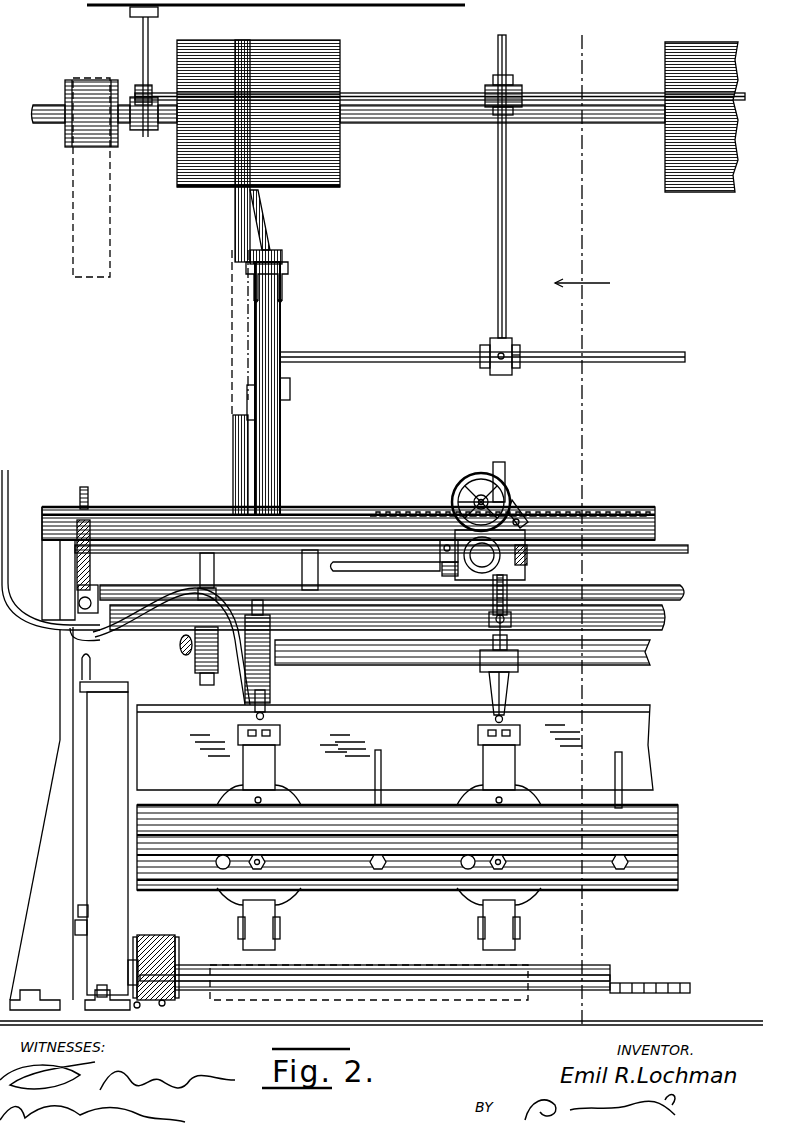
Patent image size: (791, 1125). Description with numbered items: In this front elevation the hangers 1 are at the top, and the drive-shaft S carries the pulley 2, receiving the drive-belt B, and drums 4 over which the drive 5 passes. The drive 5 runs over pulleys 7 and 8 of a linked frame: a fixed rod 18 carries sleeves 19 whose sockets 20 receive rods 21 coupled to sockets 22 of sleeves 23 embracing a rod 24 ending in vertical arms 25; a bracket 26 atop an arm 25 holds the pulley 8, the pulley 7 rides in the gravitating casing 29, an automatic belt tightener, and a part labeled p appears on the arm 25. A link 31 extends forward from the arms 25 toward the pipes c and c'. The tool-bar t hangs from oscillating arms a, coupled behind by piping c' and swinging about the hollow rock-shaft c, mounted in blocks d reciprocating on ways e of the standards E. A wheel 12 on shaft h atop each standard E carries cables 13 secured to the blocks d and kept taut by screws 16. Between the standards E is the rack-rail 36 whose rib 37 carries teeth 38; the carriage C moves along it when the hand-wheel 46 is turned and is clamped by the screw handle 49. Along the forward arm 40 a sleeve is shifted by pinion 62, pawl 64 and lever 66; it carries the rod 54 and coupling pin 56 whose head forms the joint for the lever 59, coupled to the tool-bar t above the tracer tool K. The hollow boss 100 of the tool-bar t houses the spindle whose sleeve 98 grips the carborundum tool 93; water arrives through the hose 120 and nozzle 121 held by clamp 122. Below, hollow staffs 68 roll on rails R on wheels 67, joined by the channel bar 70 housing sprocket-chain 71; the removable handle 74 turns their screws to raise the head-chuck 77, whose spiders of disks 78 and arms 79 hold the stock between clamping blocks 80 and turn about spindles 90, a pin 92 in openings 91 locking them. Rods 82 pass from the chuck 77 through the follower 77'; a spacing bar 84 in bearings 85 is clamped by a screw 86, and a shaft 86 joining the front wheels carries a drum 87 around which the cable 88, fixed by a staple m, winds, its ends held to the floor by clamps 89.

The hanger 1 is at (143, 42).
The pulley 2 is at (67, 138).
The drum 4 is at (340, 165).
The tool-driving belt 5 is at (263, 216).
The pulley 7 is at (138, 92).
The pulley 8 is at (280, 256).
The wheel 12 is at (60, 560).
The cable 13 is at (82, 512).
The tightening screw 16 is at (86, 490).
The rod 18 is at (598, 93).
The sleeve 19 is at (522, 92).
The socket 20 is at (512, 78).
The rod 21 is at (506, 45).
The socket 22 is at (498, 340).
The sleeve 23 is at (520, 365).
The rod 24 is at (650, 352).
The arm 25 is at (281, 328).
The bracket 26 is at (290, 287).
The pulley-block casing 29 is at (247, 402).
The link 31 is at (315, 553).
The rack-rail 36 is at (162, 528).
The rib 37 is at (305, 510).
The teeth 38 is at (552, 512).
The arm 40 is at (476, 565).
The hand-wheel 46 is at (481, 473).
The handle 49 is at (515, 500).
The adjustable rod 54 is at (500, 465).
The coupling pin 56 is at (512, 672).
The lever 59 is at (492, 600).
The pinion 62 is at (445, 540).
The pawl 64 is at (446, 560).
The lever 66 is at (405, 562).
The wheel 67 is at (97, 990).
The hollow staff 68 is at (100, 792).
The channel bar 70 is at (292, 966).
The sprocket-chain 71 is at (632, 984).
The removable handle 74 is at (80, 682).
The head-chuck 77 is at (407, 870).
The tail-chuck 77' is at (395, 731).
The disk 78 is at (518, 790).
The radiating arm 79 is at (268, 770).
The clamping block 80 is at (240, 742).
The spacing rod 82 is at (382, 760).
The spacing bar 84 is at (96, 917).
The bearing 85 is at (78, 924).
The clamping screw 86 is at (84, 905).
The drum 87 is at (180, 965).
The cable 88 is at (172, 1006).
The clamp 89 is at (140, 1008).
The spindle 90 is at (270, 862).
The spacing opening 91 is at (262, 798).
The pin 92 is at (223, 856).
The carborundum tool 93 is at (266, 718).
The sleeve 98 is at (268, 697).
The hollow boss 100 is at (268, 676).
The hose 120 is at (8, 475).
The nozzle 121 is at (244, 688).
The clamp 122 is at (200, 665).
The drive-belt B is at (108, 215).
The shaft S is at (425, 125).
The carriage C is at (525, 512).
The bracket p is at (292, 388).
The shaft h is at (690, 548).
The piping c' is at (420, 593).
The rocker tube c is at (406, 634).
The tool-supporting bar t is at (640, 655).
The bearing block d is at (100, 598).
The oscillating arm a is at (200, 566).
The way e is at (95, 635).
The standard E is at (60, 728).
The tracer tool K is at (512, 668).
The staple m is at (158, 935).
The rail R is at (70, 998).